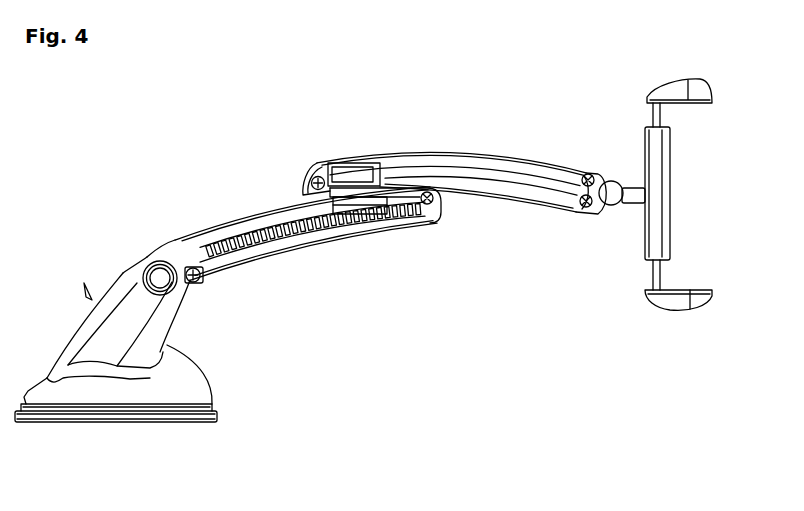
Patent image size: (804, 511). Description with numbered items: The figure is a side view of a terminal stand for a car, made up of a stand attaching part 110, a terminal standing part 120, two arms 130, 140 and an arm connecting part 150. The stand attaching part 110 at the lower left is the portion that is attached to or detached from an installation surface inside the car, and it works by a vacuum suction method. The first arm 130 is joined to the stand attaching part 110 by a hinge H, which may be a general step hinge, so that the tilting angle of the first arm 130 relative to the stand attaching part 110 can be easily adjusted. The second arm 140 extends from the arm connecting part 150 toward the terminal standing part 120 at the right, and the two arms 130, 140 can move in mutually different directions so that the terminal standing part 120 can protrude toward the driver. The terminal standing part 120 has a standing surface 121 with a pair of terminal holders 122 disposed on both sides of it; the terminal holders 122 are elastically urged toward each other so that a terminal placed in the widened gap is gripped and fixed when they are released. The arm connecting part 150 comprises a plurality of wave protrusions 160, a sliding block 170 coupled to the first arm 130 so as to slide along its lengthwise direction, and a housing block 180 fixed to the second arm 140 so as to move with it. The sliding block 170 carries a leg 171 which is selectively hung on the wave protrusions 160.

The stand attaching part 110 is at (128, 422).
The hinge H is at (146, 270).
The terminal standing part 120 is at (678, 222).
The standing surface 121 is at (664, 190).
The terminal holders 122 is at (700, 90).
The first arm 130 is at (210, 222).
The second arm 140 is at (490, 154).
The arm connecting part 150 is at (318, 161).
The wave protrusions 160 is at (272, 222).
The sliding block 170 is at (378, 215).
The leg 171 is at (348, 223).
The housing block 180 is at (360, 169).